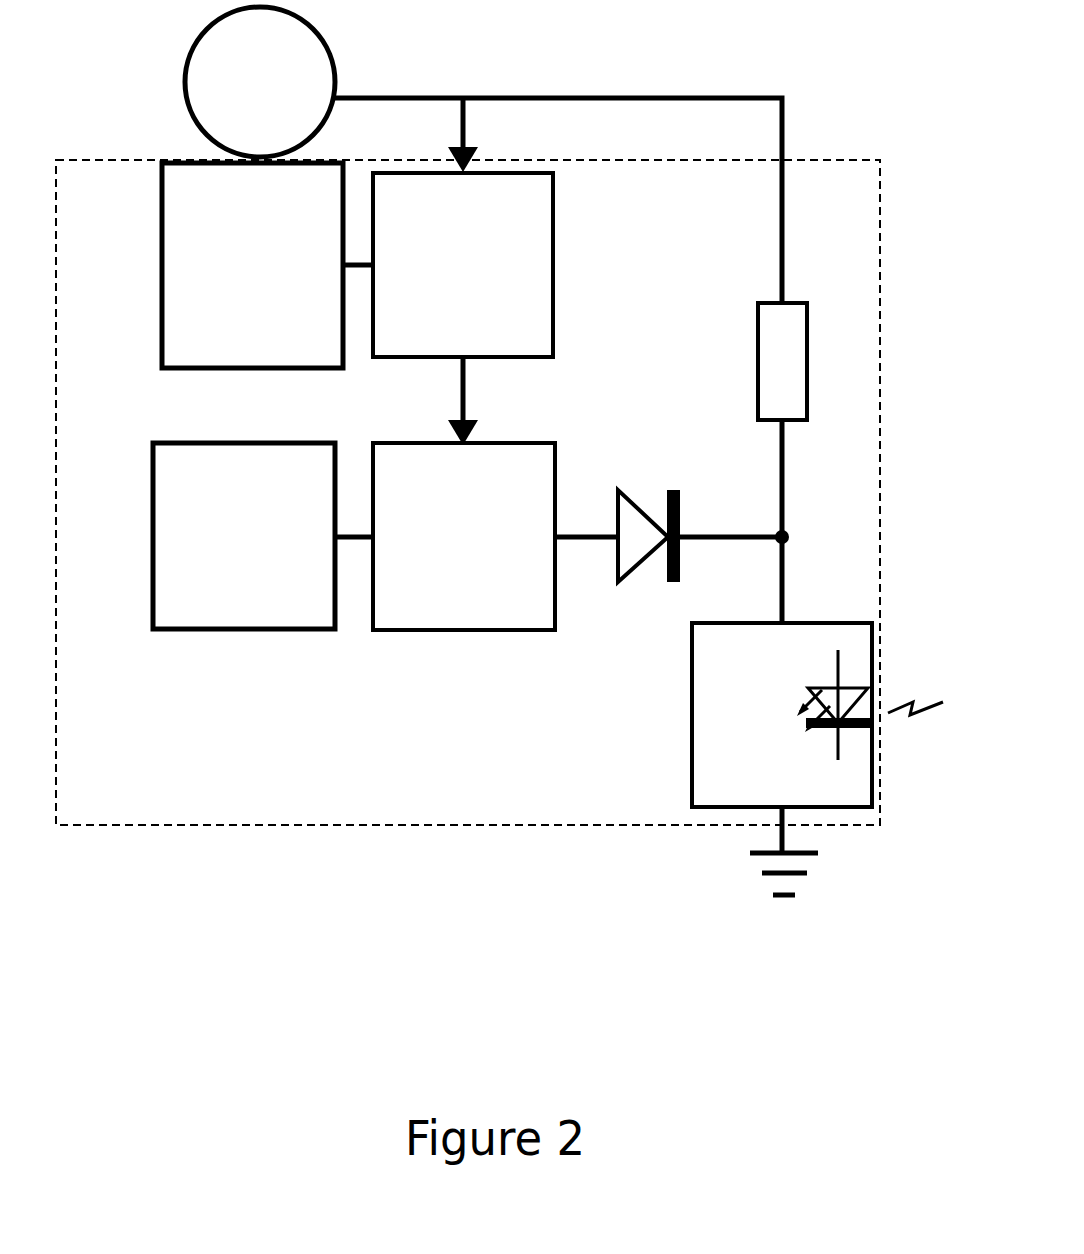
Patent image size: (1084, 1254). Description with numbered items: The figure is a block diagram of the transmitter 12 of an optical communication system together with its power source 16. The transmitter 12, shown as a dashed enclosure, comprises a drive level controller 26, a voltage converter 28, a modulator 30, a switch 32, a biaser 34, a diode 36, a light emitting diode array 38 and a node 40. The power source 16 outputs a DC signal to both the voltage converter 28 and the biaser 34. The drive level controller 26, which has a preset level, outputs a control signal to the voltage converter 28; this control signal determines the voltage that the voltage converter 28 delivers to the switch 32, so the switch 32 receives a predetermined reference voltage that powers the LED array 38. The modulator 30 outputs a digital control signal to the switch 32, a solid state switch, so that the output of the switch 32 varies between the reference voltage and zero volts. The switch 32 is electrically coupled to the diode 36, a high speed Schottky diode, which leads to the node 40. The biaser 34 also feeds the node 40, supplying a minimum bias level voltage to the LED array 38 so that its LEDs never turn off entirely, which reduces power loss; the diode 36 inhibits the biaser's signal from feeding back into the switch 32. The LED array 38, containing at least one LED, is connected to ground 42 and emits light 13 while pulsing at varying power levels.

The transmitter 12 is at (370, 835).
The light 13 is at (913, 727).
The power source 16 is at (190, 72).
The drive level controller 26 is at (205, 263).
The voltage converter 28 is at (508, 247).
The modulator 30 is at (254, 613).
The switch 32 is at (470, 612).
The biaser 34 is at (777, 315).
The diode 36 is at (655, 568).
The light emitting diode (LED) array 38 is at (713, 740).
The node 40 is at (776, 528).
The ground 42 is at (783, 872).